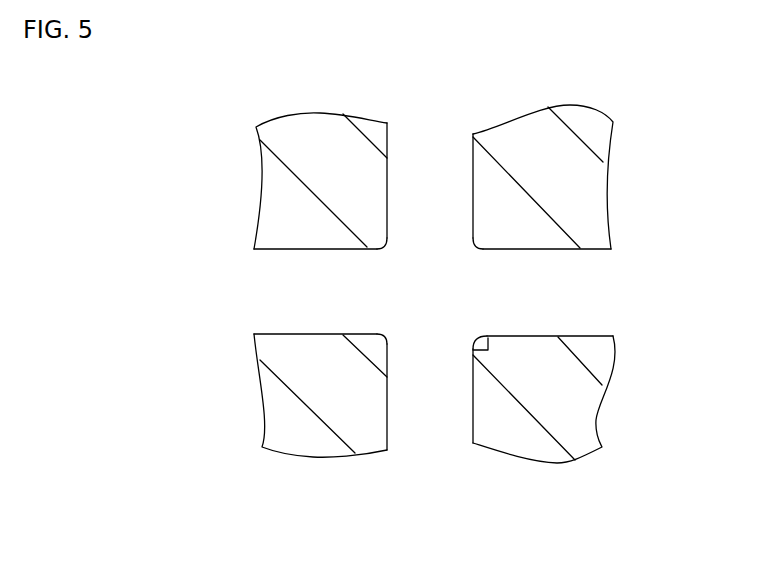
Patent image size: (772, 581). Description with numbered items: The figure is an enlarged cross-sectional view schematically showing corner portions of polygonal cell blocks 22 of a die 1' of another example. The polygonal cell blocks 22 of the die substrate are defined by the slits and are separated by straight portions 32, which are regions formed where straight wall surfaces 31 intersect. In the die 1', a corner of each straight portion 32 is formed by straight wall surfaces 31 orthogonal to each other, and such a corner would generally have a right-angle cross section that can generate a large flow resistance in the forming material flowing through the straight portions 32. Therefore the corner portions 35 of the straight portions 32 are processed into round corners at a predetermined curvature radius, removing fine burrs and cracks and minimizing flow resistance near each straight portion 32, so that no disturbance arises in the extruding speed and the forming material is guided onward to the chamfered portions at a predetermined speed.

The die 1' is at (435, 275).
The polygonal cell block 22 is at (272, 207).
The straight wall surface 31 is at (388, 155).
The straight portion 32 is at (441, 278).
The corner portion 35 is at (388, 251).